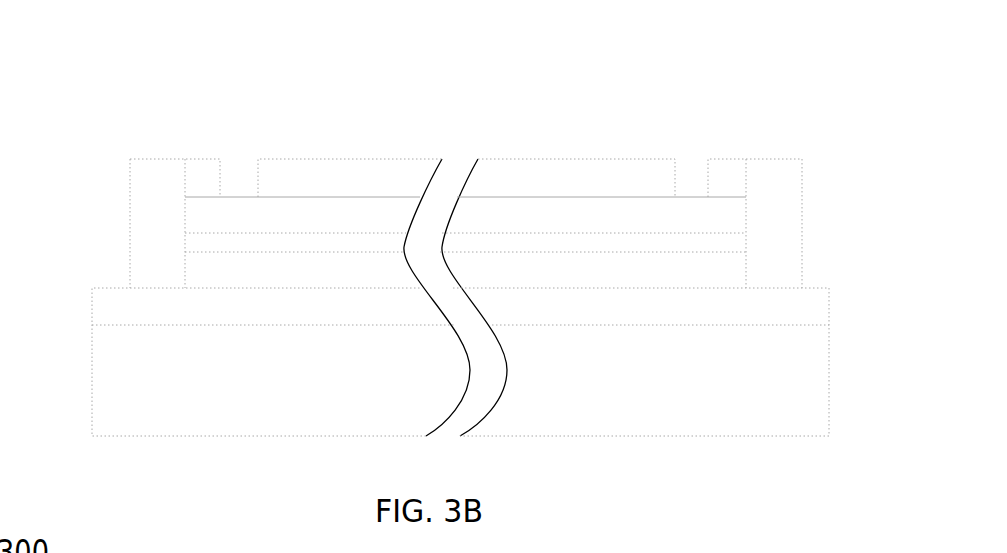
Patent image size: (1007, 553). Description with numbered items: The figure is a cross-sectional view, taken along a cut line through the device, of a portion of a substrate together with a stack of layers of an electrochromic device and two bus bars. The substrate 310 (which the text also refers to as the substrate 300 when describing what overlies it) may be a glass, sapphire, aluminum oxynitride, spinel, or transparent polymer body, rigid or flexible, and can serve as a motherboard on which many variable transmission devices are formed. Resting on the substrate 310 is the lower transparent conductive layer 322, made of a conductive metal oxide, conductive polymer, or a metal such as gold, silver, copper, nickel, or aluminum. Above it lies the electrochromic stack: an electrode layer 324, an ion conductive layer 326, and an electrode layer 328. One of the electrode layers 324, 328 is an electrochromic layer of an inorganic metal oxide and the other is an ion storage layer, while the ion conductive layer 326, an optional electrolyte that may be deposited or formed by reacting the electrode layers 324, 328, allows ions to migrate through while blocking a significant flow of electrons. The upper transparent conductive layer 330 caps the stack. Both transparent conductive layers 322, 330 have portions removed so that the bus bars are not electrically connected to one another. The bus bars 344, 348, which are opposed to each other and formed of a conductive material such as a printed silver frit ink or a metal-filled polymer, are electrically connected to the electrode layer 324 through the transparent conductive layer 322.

The substrate 300 is at (199, 66).
The substrate 310 is at (694, 394).
The transparent conductive layer 322 is at (801, 317).
The electrode layer 324 is at (203, 268).
The ion conductive layer 326 is at (718, 243).
The electrode layer 328 is at (203, 215).
The transparent conductive layer 330 is at (338, 178).
The bus bar 344 is at (157, 178).
The bus bar 348 is at (772, 195).